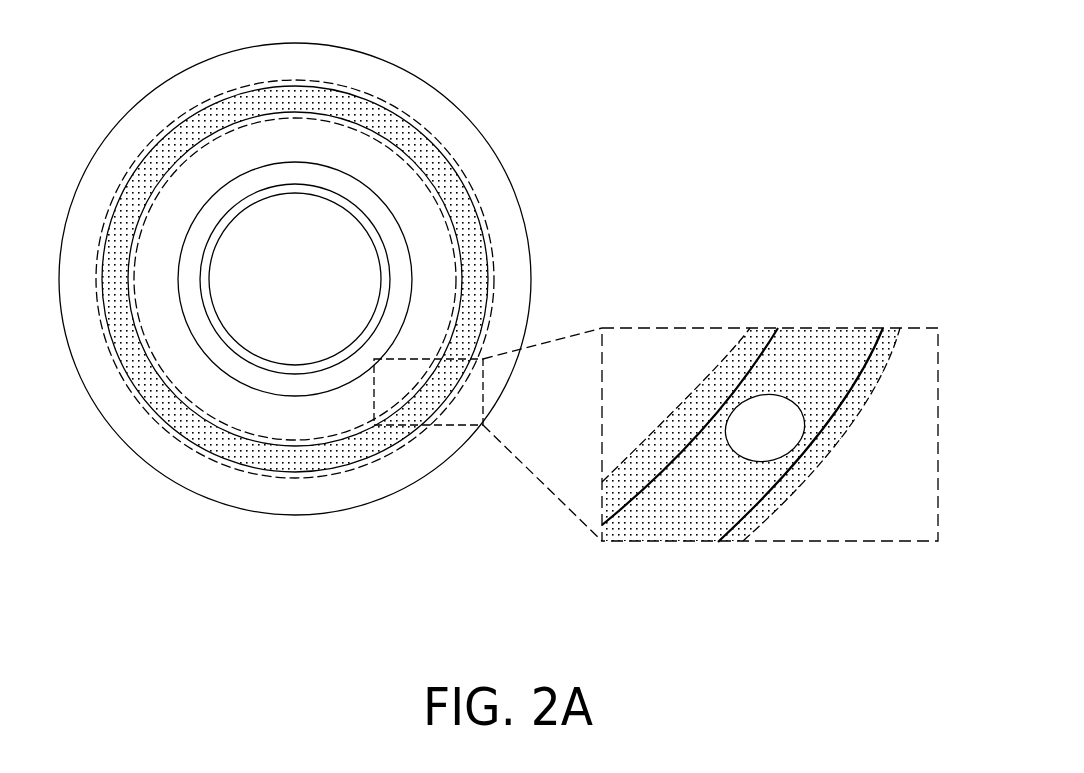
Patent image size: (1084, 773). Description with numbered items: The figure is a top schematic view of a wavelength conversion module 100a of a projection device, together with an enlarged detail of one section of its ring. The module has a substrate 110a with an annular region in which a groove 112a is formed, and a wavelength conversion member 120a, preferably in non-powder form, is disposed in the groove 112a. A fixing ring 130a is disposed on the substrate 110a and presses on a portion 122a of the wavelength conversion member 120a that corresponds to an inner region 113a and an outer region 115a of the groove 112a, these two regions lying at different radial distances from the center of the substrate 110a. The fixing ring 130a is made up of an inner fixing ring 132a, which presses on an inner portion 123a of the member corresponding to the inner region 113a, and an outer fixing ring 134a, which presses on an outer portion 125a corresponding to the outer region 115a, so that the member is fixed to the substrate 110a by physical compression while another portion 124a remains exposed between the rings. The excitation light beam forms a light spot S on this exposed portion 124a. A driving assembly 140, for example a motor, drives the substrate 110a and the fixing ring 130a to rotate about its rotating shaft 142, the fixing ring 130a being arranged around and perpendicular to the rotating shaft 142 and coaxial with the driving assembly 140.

The wavelength conversion module 100a is at (493, 608).
The substrate 110a is at (518, 197).
The groove 112a is at (640, 460).
The inner region 113a is at (668, 418).
The outer region 115a is at (824, 460).
The wavelength conversion member 120a is at (928, 218).
The portion of the wavelength conversion member 122a is at (893, 266).
The inner portion 123a is at (760, 323).
The another portion 124a is at (850, 363).
The outer portion 125a is at (897, 352).
The fixing ring 130a is at (540, 57).
The inner fixing ring 132a is at (395, 170).
The outer fixing ring 134a is at (418, 107).
The driving assembly 140 is at (262, 352).
The rotating shaft 142 is at (265, 313).
The light spot S is at (752, 430).